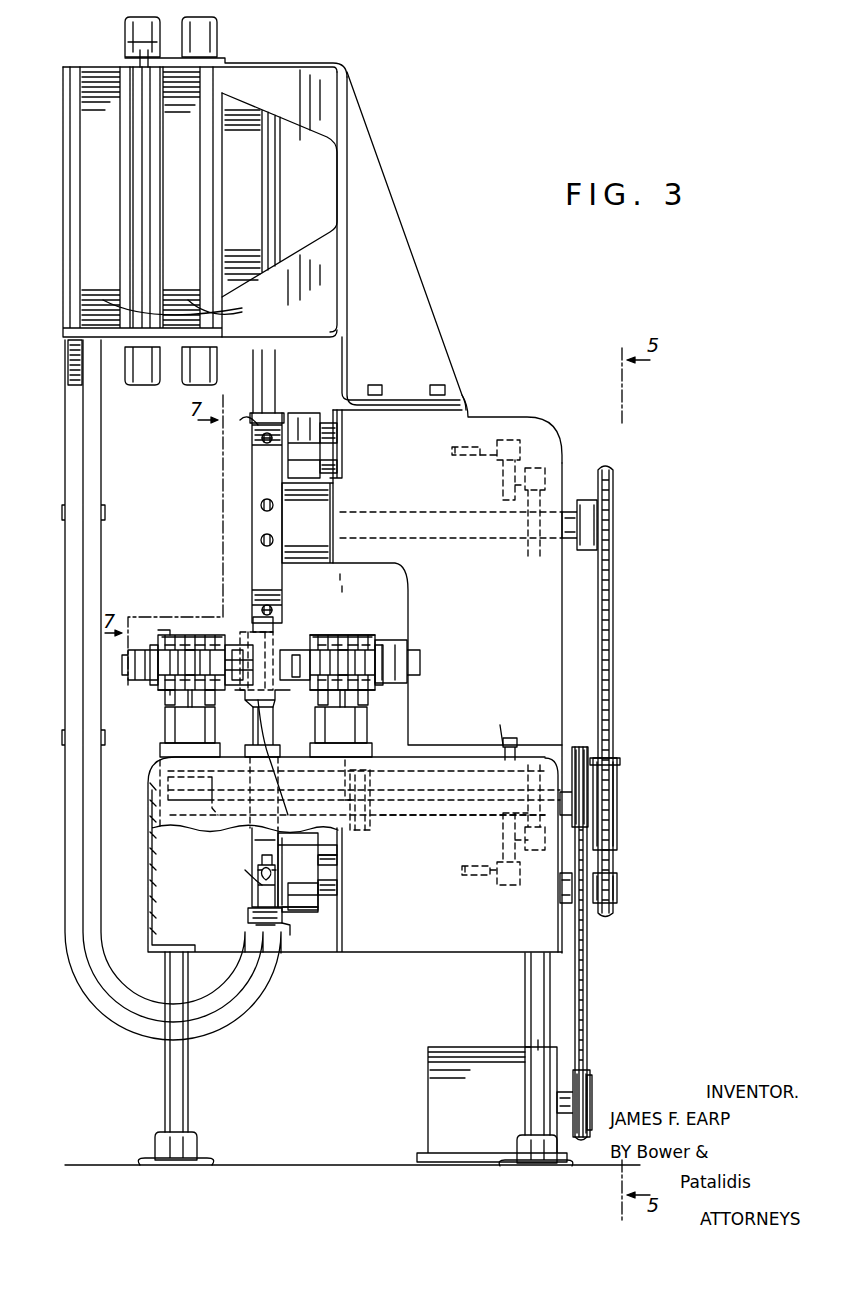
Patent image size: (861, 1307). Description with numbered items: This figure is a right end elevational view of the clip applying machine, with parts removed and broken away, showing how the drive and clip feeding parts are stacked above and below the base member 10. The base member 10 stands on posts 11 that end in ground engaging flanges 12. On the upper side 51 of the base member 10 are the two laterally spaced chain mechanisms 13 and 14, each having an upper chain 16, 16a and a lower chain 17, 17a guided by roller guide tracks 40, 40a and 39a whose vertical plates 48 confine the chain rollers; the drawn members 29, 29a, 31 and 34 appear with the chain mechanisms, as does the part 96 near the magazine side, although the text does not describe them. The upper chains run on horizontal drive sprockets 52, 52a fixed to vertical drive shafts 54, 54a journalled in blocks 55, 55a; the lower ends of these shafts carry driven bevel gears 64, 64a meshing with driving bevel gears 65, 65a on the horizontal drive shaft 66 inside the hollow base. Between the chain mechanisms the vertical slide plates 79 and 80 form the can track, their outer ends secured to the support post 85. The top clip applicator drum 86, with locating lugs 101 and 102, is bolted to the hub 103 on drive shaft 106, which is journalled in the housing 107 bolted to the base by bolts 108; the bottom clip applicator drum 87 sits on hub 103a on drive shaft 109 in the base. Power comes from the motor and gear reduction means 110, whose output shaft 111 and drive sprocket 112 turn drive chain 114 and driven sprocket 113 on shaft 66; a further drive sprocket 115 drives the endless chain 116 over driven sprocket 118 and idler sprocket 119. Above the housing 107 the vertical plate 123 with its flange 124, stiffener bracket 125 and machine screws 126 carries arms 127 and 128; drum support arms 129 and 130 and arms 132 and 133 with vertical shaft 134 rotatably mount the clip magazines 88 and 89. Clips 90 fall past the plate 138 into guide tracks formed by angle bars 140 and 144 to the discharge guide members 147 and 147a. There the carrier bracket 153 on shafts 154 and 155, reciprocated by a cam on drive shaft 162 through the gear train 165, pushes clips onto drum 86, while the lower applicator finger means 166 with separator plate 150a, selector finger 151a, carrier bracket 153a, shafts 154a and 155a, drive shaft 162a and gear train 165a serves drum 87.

The base member 10 is at (495, 958).
The posts 11 is at (527, 1017).
The ground engaging flanges 12 is at (530, 1160).
The chain mechanism 13 is at (125, 678).
The chain mechanism 14 is at (398, 630).
The upper chain 16 is at (190, 632).
The upper chain 16a is at (355, 633).
The lower chain 17 is at (188, 690).
The lower chain 17a is at (390, 680).
The bearing 29 is at (152, 672).
The bearing 29a is at (385, 658).
The gear 31 is at (282, 630).
The coupling 34 is at (250, 630).
The inner roller guide track 39a is at (285, 692).
The outer roller guide track 40 is at (170, 695).
The outer roller guide track 40a is at (370, 700).
The plates 48 is at (168, 690).
The upper side of base member 51 is at (490, 755).
The horizontal drive sprocket 52 is at (178, 632).
The horizontal drive sprocket 52a is at (335, 633).
The vertical drive shaft 54 is at (195, 720).
The vertical drive shaft 54a is at (372, 725).
The journal block 55 is at (185, 735).
The journal block 55a is at (372, 748).
The driven bevel gear 64 is at (165, 775).
The driven bevel gear 64a is at (435, 770).
The driving bevel gear 65 is at (205, 828).
The driving bevel gear 65a is at (370, 815).
The drive shaft 66 is at (462, 783).
The vertical slide plate 79 is at (278, 735).
The vertical slide plate 80 is at (248, 755).
The support post 85 is at (287, 761).
The top clip applicator drum 86 is at (252, 472).
The bottom clip applicator drum 87 is at (252, 845).
The clip feeder magazine 88 is at (285, 210).
The clip feeder magazine 89 is at (58, 185).
The clip 90 is at (245, 890).
The hinge strip 96 is at (75, 355).
The locating lug 101 is at (260, 506).
The locating lug 102 is at (260, 540).
The hub 103 is at (318, 512).
The hub 103a is at (322, 843).
The drive shaft 106 is at (460, 523).
The housing 107 is at (532, 412).
The bolts 108 is at (515, 740).
The drive shaft 109 is at (430, 820).
The combined motor and gear reduction means 110 is at (440, 1085).
The output shaft 111 is at (562, 1090).
The drive sprocket 112 is at (592, 1087).
The driven sprocket 113 is at (590, 750).
The drive chain 114 is at (590, 965).
The drive sprocket 115 is at (620, 800).
The endless chain 116 is at (614, 635).
The driven sprocket 118 is at (600, 512).
The idler sprocket 119 is at (620, 762).
The vertical plate 123 is at (348, 310).
The flange 124 is at (455, 403).
The stiffener bracket 125 is at (440, 352).
The machine screws 126 is at (437, 385).
The arm 127 is at (240, 58).
The arm 128 is at (264, 340).
The drum support arm 129 is at (330, 82).
The drum support arm 130 is at (330, 275).
The drum support arm 132 is at (130, 30).
The drum support arm 133 is at (185, 380).
The vertical shaft 134 is at (140, 60).
The plate 138 is at (112, 355).
The angle bar 140 is at (270, 368).
The angle bar 144 is at (120, 1008).
The discharge guide member 147 is at (280, 405).
The discharge guide member 147a is at (245, 920).
The clip separator plate 150a is at (288, 930).
The selector finger 151a is at (258, 903).
The carrier bracket 153 is at (318, 405).
The carrier bracket 153a is at (310, 905).
The shaft 154 is at (330, 432).
The shaft 154a is at (340, 890).
The shaft 155 is at (328, 466).
The shaft 155a is at (338, 860).
The drive shaft 162 is at (480, 445).
The drive shaft 162a is at (475, 880).
The gear train 165 is at (530, 458).
The gear train 165a is at (528, 852).
The applicator finger means 166 is at (328, 900).